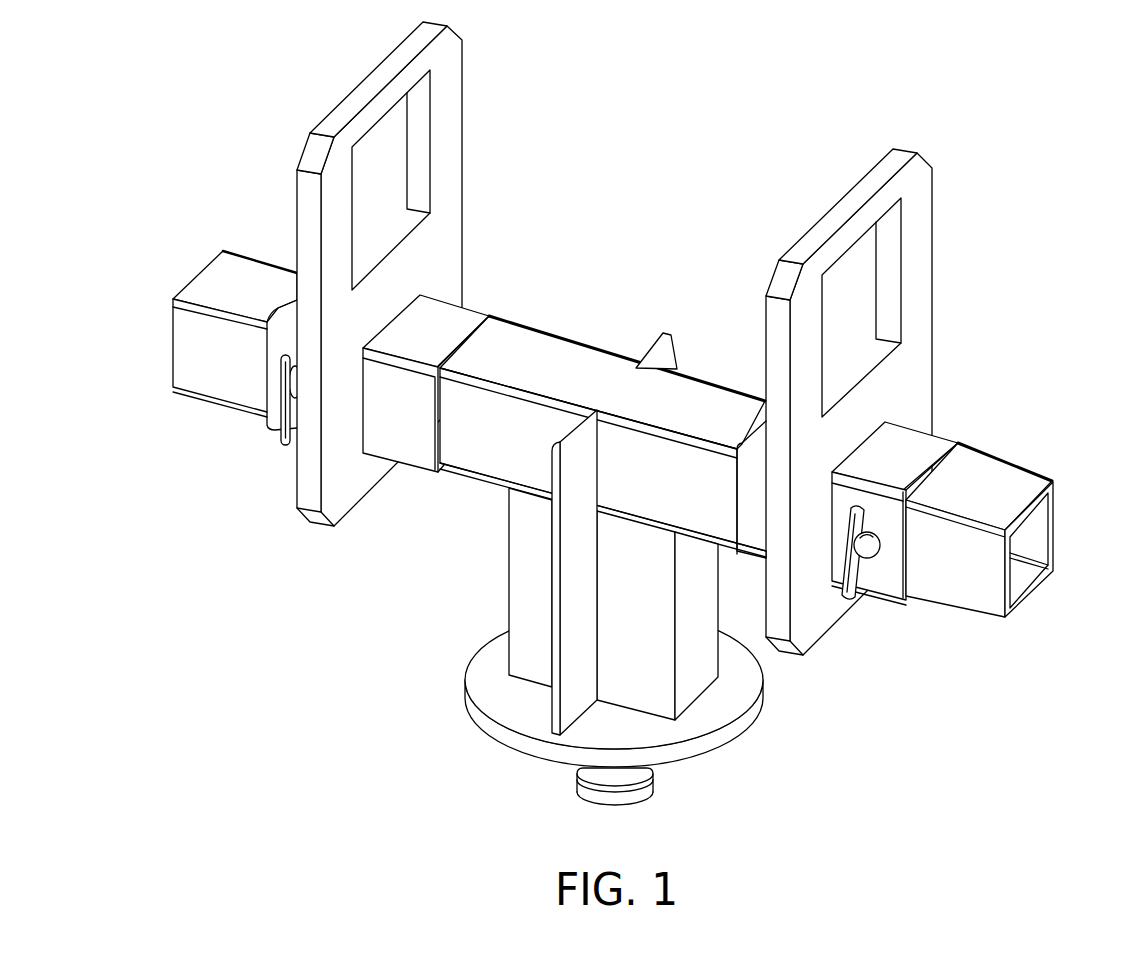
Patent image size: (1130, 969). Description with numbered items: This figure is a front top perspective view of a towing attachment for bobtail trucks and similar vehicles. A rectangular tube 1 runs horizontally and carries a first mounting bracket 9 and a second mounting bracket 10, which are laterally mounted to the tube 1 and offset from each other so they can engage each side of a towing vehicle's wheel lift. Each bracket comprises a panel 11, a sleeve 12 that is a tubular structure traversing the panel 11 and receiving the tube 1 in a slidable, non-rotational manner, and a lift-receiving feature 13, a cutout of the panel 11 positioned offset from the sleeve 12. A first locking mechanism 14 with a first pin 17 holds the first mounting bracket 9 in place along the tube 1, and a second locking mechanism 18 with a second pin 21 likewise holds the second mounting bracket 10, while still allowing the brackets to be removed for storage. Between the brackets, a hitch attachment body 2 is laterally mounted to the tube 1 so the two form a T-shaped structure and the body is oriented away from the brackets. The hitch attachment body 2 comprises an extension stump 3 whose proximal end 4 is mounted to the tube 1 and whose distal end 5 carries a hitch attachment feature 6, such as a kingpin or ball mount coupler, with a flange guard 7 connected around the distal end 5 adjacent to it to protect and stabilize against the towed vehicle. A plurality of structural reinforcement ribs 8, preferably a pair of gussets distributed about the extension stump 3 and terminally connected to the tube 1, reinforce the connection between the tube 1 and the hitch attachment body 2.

The tube 1 is at (545, 351).
The hitch attachment body 2 is at (510, 719).
The extension stump 3 is at (518, 553).
The proximal end 4 is at (598, 413).
The distal end 5 is at (726, 692).
The hitch attachment feature 6 is at (577, 788).
The flange guard 7 is at (478, 710).
The plurality of structural reinforcement ribs 8 is at (667, 368).
The first mounting bracket 9 is at (225, 271).
The second mounting bracket 10 is at (980, 446).
The panel 11 is at (652, 338).
The sleeve 12 is at (460, 311).
The lift-receiving feature 13 is at (379, 187).
The first locking mechanism 14 is at (238, 393).
The first pin 17 is at (291, 397).
The second locking mechanism 18 is at (913, 552).
The second pin 21 is at (870, 554).